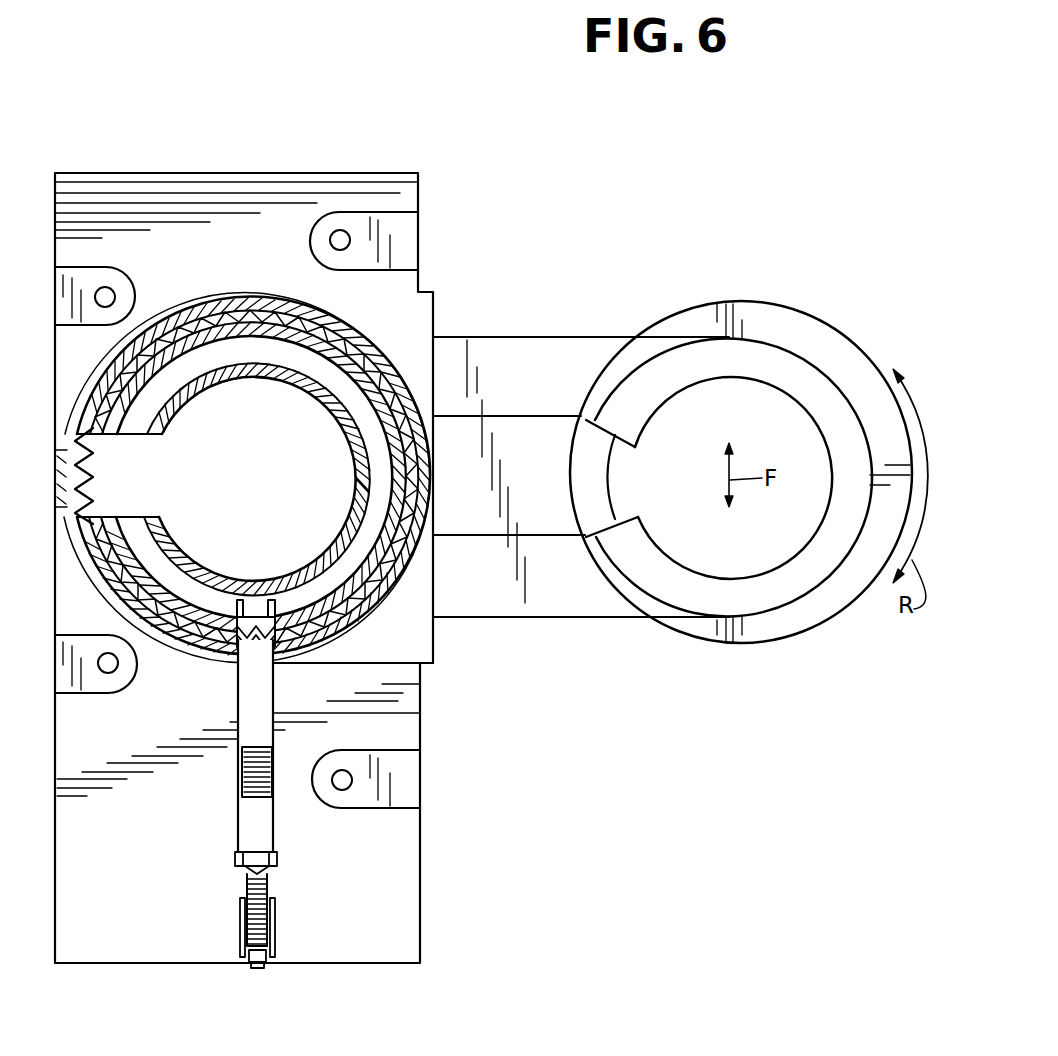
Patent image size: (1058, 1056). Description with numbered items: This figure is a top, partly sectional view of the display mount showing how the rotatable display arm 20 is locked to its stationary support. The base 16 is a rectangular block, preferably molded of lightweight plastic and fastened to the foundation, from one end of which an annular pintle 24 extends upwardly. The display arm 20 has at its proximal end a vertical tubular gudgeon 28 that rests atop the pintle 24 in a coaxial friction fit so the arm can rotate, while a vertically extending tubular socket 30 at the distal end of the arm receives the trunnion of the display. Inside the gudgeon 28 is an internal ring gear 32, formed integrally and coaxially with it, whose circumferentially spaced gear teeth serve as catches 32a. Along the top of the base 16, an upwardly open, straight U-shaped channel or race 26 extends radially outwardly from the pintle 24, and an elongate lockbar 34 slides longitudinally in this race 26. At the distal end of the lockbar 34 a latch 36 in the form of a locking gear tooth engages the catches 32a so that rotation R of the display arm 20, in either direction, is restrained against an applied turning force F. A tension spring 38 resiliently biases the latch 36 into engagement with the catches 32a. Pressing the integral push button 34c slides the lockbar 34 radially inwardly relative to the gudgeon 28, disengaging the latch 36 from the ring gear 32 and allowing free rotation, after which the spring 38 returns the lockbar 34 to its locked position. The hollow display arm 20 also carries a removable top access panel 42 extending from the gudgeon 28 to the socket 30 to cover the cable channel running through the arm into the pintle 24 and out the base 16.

The base 16 is at (195, 173).
The display arm 20 is at (537, 337).
The pintle 24 is at (303, 380).
The race 26 is at (272, 947).
The gudgeon 28 is at (164, 313).
The socket 30 is at (774, 305).
The internal ring gear 32 is at (257, 308).
The catches 32a is at (97, 487).
The lockbar 34 is at (267, 835).
The push button 34c is at (242, 788).
The latch 36 is at (257, 612).
The tension spring 38 is at (252, 918).
The top access panel 42 is at (593, 481).